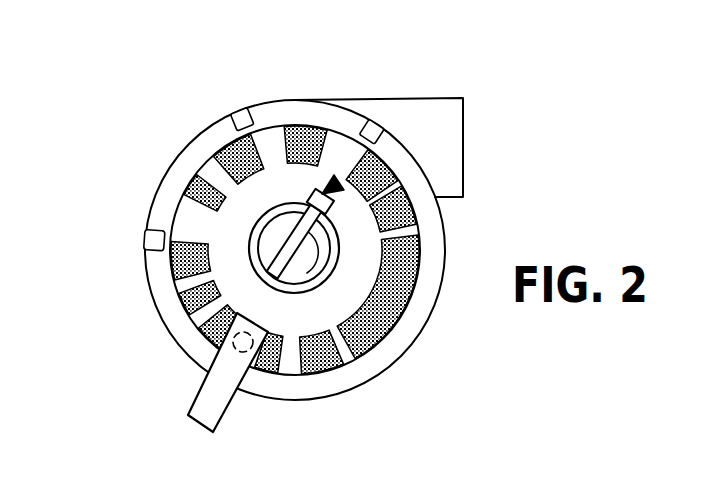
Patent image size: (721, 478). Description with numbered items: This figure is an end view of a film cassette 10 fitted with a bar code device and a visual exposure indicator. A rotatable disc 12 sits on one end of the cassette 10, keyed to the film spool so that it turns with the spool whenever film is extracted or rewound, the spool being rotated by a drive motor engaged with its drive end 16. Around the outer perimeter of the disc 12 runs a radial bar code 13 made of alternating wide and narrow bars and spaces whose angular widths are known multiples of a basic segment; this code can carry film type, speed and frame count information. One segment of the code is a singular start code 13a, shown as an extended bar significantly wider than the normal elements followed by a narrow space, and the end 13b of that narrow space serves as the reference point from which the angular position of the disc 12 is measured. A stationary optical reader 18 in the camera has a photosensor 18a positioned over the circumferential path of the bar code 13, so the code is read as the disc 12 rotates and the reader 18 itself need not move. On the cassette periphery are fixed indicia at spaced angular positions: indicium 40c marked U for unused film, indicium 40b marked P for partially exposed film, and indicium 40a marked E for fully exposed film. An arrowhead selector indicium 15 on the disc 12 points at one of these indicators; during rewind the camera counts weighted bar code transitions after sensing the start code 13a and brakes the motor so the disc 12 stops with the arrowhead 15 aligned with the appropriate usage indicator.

The cassette 10 is at (188, 143).
The rotatable disc 12 is at (228, 268).
The bar code 13 is at (303, 128).
The start code 13a is at (455, 242).
The end of the narrow space 13b is at (340, 356).
The arrowhead selector indicium 15 is at (334, 176).
The drive end of the film spool 16 is at (303, 292).
The optical reader 18 is at (195, 401).
The photosensor 18a is at (203, 352).
The fully exposed indicium (E) 40a is at (376, 121).
The partially exposed indicium (P) 40b is at (240, 108).
The unused film indicium (U) 40c is at (144, 240).